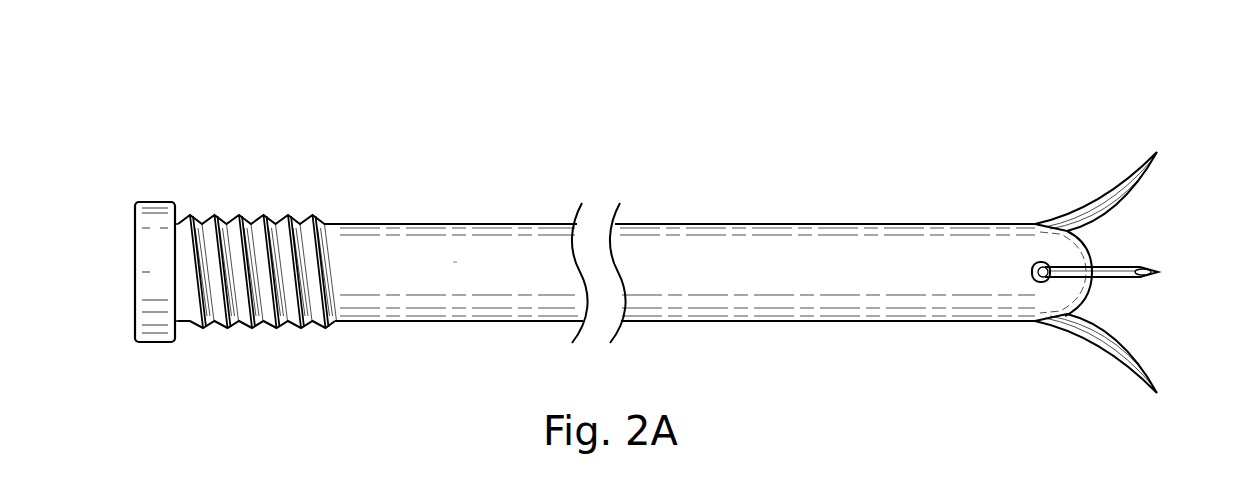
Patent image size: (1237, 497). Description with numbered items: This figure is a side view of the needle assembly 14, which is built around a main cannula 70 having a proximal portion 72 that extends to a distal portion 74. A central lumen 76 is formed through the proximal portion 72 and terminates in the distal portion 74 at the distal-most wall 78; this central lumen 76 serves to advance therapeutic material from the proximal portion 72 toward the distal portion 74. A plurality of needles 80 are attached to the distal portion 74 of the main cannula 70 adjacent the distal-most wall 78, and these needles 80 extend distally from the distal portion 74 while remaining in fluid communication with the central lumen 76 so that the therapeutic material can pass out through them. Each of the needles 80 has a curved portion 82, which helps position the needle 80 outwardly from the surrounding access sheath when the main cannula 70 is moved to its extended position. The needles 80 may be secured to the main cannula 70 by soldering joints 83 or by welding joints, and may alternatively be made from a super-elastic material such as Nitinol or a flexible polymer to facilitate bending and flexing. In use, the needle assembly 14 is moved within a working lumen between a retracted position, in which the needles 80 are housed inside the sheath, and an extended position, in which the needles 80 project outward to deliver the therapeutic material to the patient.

The needle assembly 14 is at (865, 130).
The main cannula 70 is at (679, 257).
The proximal portion 72 is at (323, 224).
The distal portion 74 is at (987, 253).
The central lumen 76 is at (455, 260).
The distal-most wall 78 is at (1091, 247).
The needles 80 is at (1158, 152).
The curved portion 82 is at (1100, 195).
The soldering joints 83 is at (1034, 282).